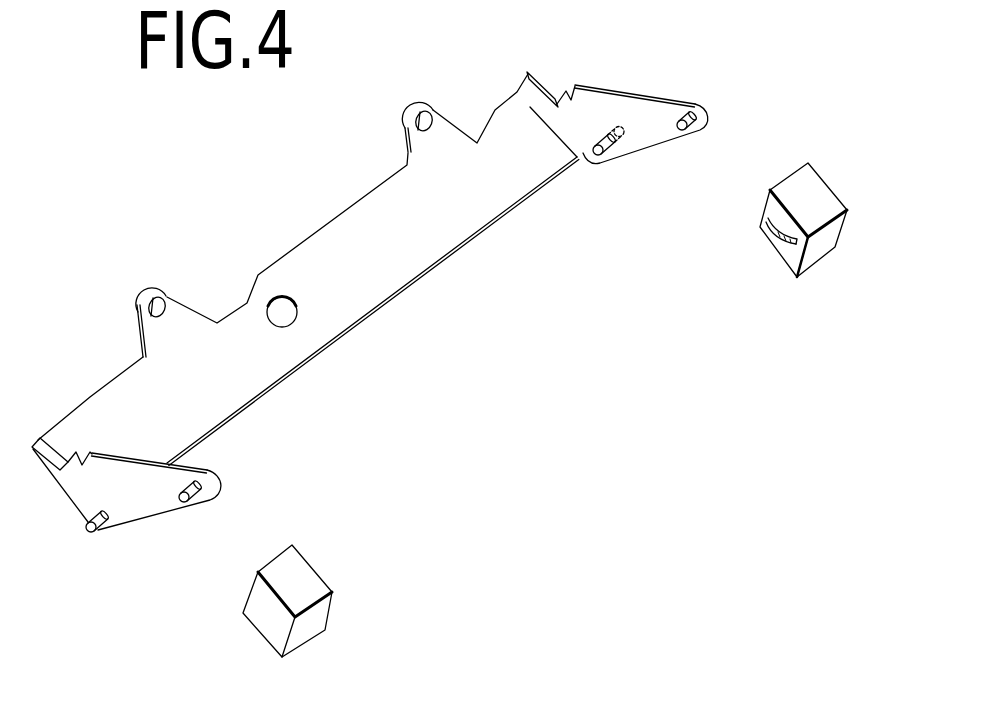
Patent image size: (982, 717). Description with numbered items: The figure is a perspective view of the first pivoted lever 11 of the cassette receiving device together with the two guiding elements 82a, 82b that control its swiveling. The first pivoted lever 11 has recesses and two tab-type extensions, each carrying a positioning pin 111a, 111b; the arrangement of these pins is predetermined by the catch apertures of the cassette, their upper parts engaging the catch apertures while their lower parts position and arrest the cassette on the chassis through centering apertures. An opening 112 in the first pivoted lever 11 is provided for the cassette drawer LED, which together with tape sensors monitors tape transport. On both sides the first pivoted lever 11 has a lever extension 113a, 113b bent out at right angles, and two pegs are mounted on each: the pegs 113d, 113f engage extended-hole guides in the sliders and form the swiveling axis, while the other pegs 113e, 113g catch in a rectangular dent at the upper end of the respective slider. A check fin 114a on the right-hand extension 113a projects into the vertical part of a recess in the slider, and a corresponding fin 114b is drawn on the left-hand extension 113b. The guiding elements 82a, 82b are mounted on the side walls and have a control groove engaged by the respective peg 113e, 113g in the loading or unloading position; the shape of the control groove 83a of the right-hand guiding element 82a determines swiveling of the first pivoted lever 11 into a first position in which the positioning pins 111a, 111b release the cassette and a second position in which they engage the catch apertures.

The first pivoted lever 11 is at (385, 310).
The positioning pin 111a is at (417, 128).
The positioning pin 111b is at (140, 310).
The opening 112 is at (290, 320).
The lever extension 113a is at (625, 98).
The lever extension 113b is at (146, 507).
The peg 113d is at (615, 160).
The peg 113e is at (702, 110).
The peg 113f is at (103, 533).
The peg 113g is at (198, 505).
The check (stop) fin 114a is at (576, 87).
The spring tab 114b is at (70, 447).
The guiding element 82a is at (823, 197).
The guiding element 82b is at (303, 578).
The control groove 83a is at (762, 218).